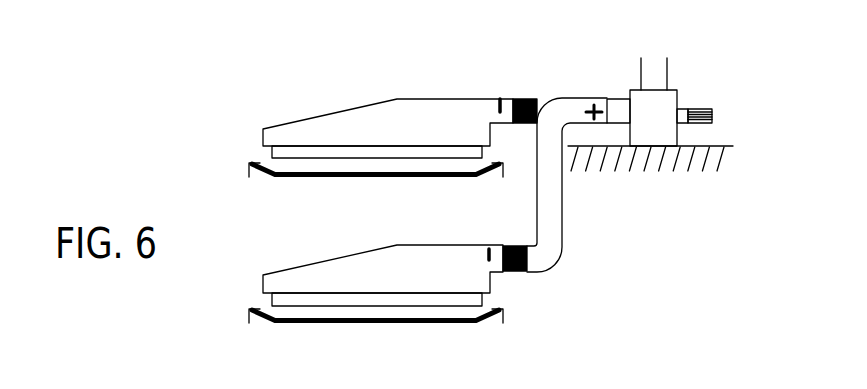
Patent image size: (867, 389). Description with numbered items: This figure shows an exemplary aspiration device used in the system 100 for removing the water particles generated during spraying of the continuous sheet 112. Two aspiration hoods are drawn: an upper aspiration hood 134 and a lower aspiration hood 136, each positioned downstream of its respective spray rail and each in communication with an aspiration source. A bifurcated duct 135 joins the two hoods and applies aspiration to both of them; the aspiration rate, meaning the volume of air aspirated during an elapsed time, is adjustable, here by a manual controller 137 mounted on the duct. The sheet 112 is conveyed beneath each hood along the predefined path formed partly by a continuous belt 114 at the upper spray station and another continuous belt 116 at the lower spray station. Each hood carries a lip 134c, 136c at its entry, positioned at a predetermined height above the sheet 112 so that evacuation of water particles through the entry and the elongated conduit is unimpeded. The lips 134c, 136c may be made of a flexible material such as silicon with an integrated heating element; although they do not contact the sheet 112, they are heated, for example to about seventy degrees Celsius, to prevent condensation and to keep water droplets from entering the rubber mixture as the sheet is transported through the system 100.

The system 100 is at (84, 384).
The continuous sheet 112 is at (274, 177).
The continuous belt 114 is at (494, 173).
The continuous belt 116 is at (494, 320).
The aspiration hood 134 is at (338, 130).
The lip 134c is at (425, 153).
The bifurcated duct 135 is at (552, 215).
The aspiration hood 136 is at (338, 275).
The lip 136c is at (423, 300).
The manual controller 137 is at (501, 100).